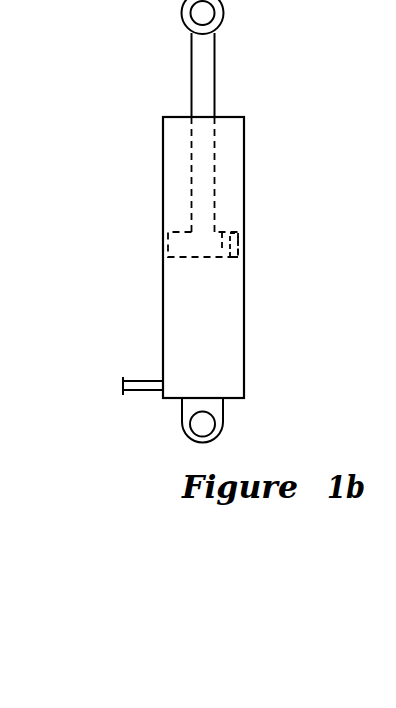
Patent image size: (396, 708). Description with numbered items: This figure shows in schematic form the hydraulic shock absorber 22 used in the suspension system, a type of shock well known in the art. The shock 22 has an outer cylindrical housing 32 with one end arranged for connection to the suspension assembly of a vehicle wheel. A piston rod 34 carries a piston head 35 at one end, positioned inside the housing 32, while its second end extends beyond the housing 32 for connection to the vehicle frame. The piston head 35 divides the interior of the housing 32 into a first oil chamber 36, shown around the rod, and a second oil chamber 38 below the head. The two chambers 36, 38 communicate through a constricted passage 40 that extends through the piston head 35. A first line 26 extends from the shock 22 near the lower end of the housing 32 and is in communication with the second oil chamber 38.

The hydraulic shock absorber 22 is at (252, 189).
The piston rod 34 is at (205, 80).
The first oil chamber 36 is at (178, 207).
The piston head 35 is at (185, 258).
The constricted passage 40 is at (222, 258).
The second oil chamber 38 is at (177, 328).
The outer cylindrical housing 32 is at (244, 347).
The first line 26 is at (143, 393).